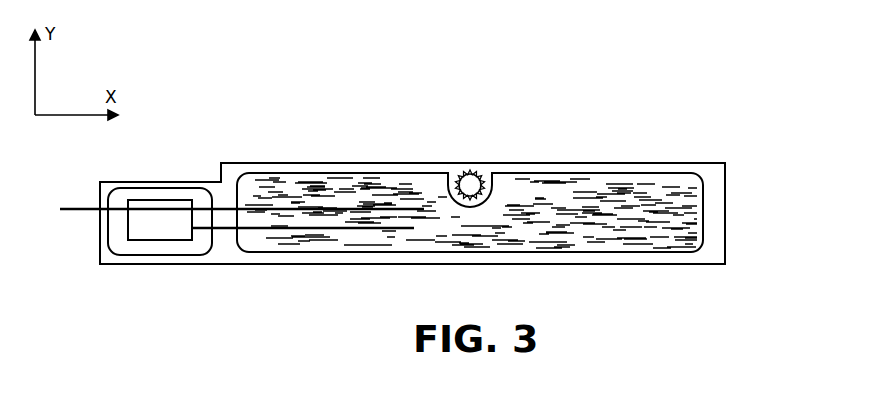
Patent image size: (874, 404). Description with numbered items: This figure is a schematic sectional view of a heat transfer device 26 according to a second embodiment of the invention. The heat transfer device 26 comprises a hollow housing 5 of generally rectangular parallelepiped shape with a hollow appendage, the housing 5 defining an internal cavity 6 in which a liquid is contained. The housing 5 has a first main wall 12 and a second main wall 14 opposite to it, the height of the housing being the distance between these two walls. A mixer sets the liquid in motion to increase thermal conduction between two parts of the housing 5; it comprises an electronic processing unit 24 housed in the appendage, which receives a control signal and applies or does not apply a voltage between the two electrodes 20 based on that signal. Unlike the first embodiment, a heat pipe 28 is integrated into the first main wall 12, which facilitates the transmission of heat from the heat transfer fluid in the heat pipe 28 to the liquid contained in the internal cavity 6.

The housing 5 is at (725, 222).
The internal cavity 6 is at (690, 198).
The first main wall 12 is at (533, 164).
The second main wall 14 is at (533, 265).
The electrodes 20 is at (328, 209).
The electronic processing unit 24 is at (160, 221).
The heat transfer device 26 is at (168, 288).
The heat pipe 28 is at (471, 172).